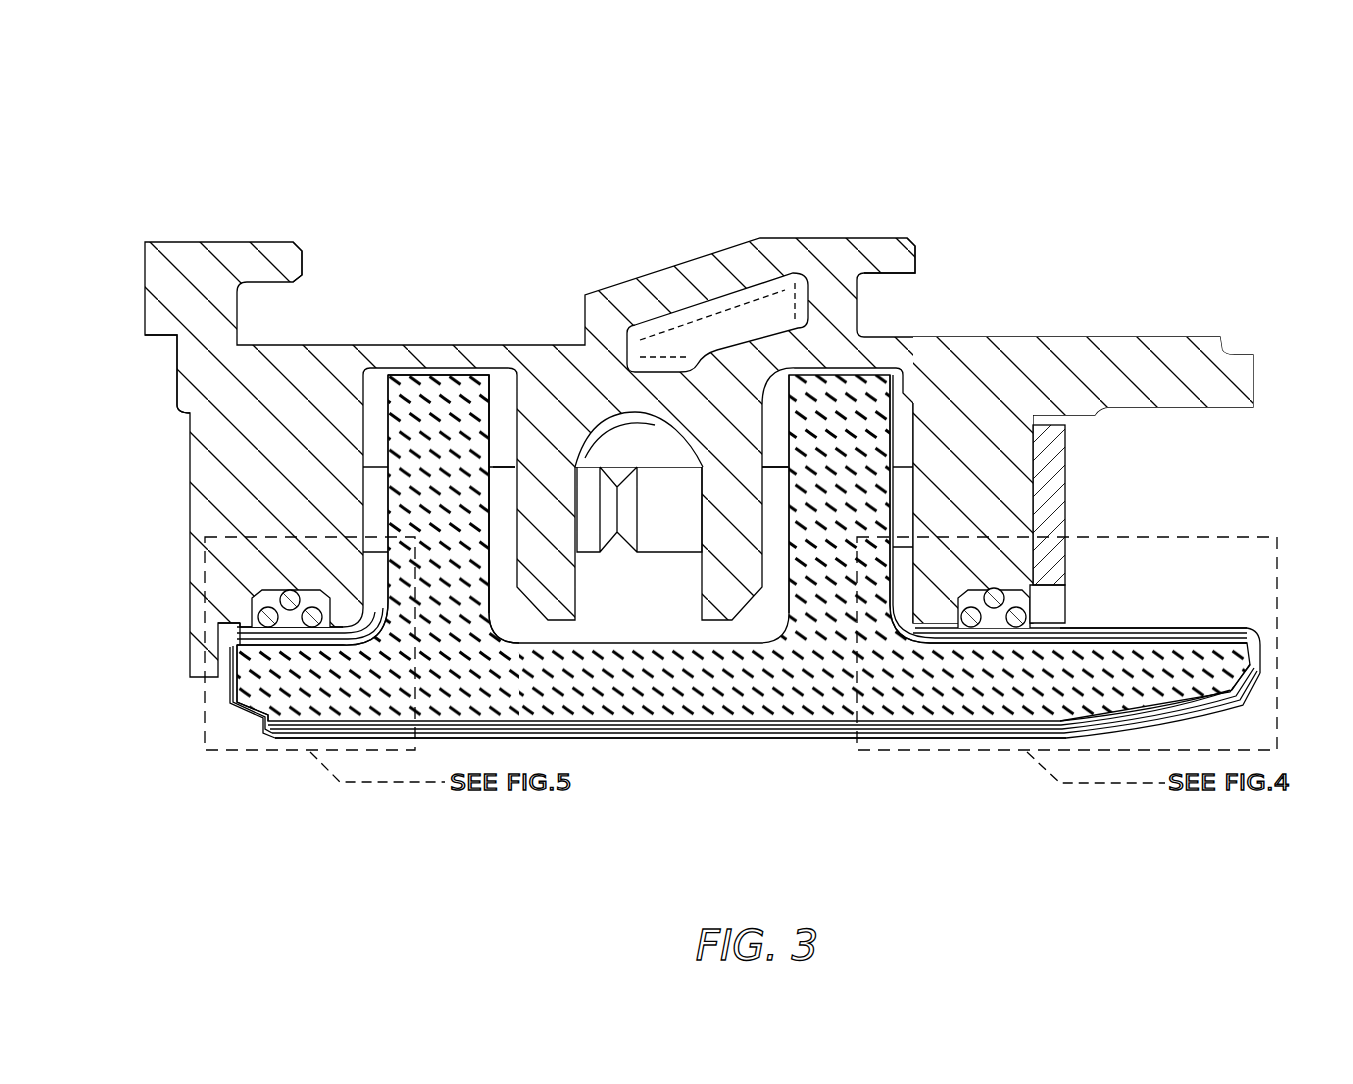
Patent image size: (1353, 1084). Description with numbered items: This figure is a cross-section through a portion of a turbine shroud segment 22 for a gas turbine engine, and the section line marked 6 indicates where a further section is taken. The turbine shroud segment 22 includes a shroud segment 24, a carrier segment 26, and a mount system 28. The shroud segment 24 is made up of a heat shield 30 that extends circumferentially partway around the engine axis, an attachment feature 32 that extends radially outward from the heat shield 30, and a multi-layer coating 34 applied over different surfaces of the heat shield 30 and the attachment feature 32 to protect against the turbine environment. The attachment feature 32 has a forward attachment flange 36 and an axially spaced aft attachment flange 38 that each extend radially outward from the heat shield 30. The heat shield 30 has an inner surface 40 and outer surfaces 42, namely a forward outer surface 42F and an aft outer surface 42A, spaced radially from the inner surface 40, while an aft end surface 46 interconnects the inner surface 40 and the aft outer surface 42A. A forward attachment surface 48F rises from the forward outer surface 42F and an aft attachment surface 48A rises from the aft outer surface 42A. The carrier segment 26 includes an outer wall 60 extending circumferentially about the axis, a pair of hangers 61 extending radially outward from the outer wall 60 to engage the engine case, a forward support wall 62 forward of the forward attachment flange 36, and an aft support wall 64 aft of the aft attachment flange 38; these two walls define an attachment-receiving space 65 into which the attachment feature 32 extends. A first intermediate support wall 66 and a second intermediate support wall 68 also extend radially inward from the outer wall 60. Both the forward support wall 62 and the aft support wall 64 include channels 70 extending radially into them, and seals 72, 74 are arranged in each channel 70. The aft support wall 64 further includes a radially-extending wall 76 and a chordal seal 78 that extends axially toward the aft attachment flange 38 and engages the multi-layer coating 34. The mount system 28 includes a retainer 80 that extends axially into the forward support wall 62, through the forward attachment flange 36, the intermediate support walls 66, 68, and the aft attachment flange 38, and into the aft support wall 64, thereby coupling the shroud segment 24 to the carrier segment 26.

The turbine shroud segment 22 is at (166, 160).
The shroud segment 24 is at (971, 845).
The carrier segment 26 is at (772, 153).
The mount system 28 is at (594, 213).
The heat shield 30 is at (788, 724).
The attachment feature 32 is at (737, 799).
The multi-layer coating 34 is at (648, 752).
The forward attachment flange 36 is at (496, 567).
The aft attachment flange 38 is at (785, 565).
The inner surface 40 is at (927, 722).
The outer surfaces 42 is at (548, 637).
The forward outer surface 42F is at (250, 628).
The aft outer surface 42A is at (1155, 643).
The aft end surface 46 is at (1256, 657).
The forward attachment surface 48F is at (360, 580).
The aft attachment surface 48A is at (904, 560).
The outer wall 60 is at (526, 340).
The hangers 61 is at (305, 258).
The forward support wall 62 is at (162, 405).
The aft support wall 64 is at (1132, 233).
The attachment-receiving space 65 is at (647, 619).
The first intermediate support wall 66 is at (508, 428).
The second intermediate support wall 68 is at (769, 433).
The channels 70 is at (285, 592).
The seal 72 is at (248, 600).
The seal 74 is at (1039, 617).
The radially-extending wall 76 is at (1042, 465).
The chordal seal 78 is at (916, 550).
The retainer 80 is at (659, 462).
The section line 6 is at (930, 321).